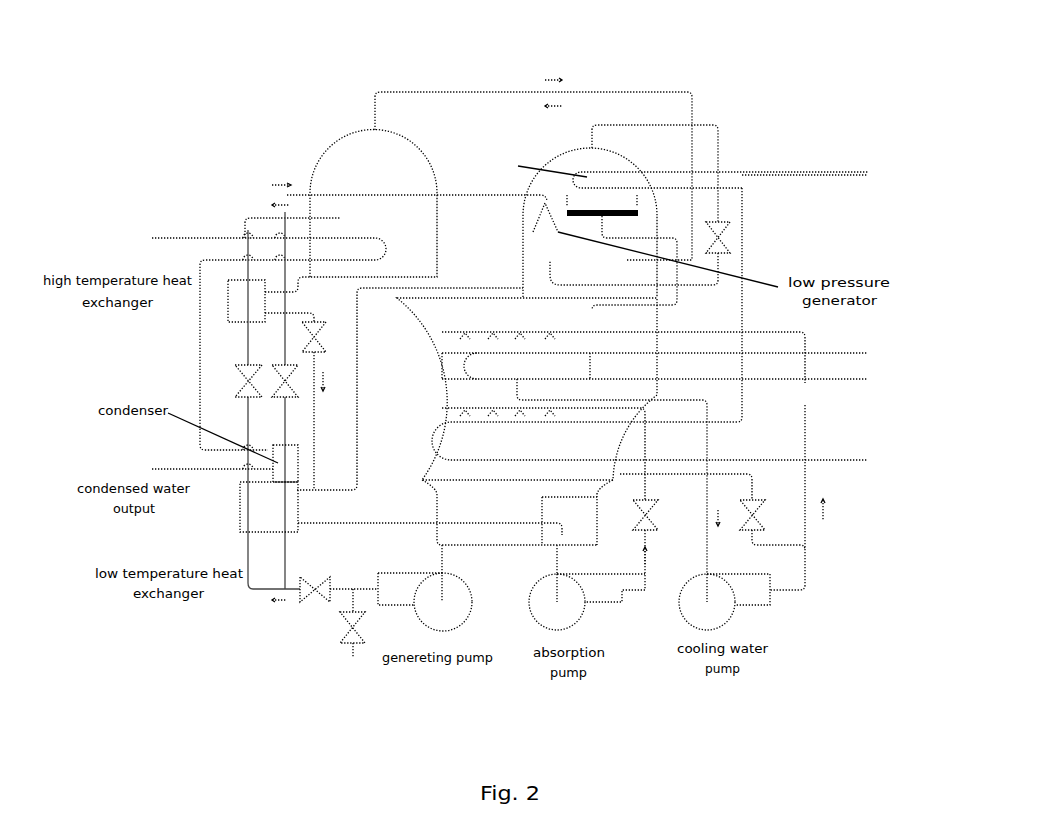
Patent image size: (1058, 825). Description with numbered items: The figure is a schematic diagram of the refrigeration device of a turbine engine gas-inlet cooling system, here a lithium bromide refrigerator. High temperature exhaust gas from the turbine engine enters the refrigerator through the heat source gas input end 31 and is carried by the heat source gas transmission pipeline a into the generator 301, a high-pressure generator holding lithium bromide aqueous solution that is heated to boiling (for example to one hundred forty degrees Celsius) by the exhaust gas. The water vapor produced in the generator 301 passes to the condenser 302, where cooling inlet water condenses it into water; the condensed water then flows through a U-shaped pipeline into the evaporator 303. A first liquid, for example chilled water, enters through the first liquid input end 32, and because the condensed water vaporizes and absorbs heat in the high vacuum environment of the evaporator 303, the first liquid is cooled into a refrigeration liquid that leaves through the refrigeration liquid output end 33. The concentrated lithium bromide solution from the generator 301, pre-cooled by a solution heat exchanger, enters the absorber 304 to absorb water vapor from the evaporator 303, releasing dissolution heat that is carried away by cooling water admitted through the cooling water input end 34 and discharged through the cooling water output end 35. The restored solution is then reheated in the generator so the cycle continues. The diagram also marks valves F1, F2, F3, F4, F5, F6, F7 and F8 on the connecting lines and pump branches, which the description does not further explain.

The heat source gas input end 31 is at (168, 237).
The heat source gas transmission pipeline a is at (377, 237).
The generator 301 is at (337, 157).
The condenser 302 is at (565, 200).
The cooling water output end 35 is at (830, 168).
The refrigeration liquid output end 33 is at (840, 353).
The first liquid input end 32 is at (842, 380).
The cooling water input end 34 is at (838, 465).
The evaporator 303 is at (435, 365).
The absorber 304 is at (570, 487).
The valve F1 is at (315, 603).
The valve F2 is at (237, 381).
The valve F3 is at (277, 366).
The valve F4 is at (326, 337).
The valve F5 is at (742, 237).
The valve F6 is at (765, 515).
The valve F7 is at (351, 642).
The valve F8 is at (662, 515).